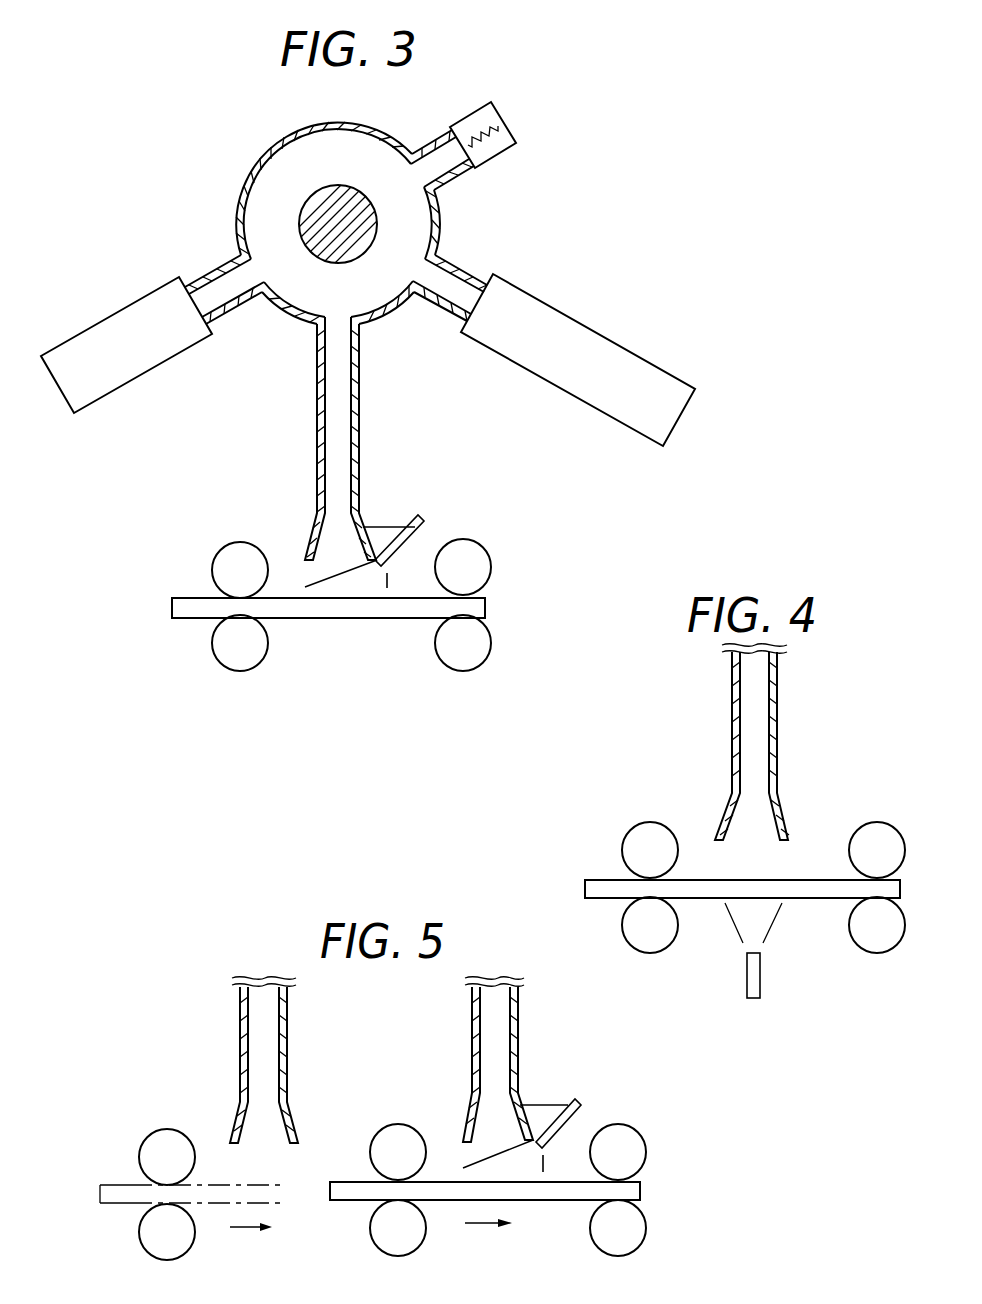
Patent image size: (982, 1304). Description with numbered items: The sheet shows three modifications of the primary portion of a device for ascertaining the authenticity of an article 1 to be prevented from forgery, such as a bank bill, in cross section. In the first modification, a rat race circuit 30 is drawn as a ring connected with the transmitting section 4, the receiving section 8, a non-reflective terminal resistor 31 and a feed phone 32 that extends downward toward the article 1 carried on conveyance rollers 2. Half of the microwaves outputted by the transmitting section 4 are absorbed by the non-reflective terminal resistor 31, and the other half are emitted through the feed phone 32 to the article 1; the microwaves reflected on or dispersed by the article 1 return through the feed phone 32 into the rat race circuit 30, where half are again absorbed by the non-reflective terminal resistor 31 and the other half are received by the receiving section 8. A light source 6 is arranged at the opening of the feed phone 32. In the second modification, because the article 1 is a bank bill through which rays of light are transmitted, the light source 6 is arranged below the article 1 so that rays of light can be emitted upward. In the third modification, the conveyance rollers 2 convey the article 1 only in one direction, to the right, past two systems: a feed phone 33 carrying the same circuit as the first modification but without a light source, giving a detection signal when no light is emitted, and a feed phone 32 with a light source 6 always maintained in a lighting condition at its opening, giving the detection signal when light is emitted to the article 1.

In FIG. 3, the article to be prevented from forgery 1 is at (172, 606).
In FIG. 4, the article to be prevented from forgery 1 is at (600, 880).
In FIG. 3, the conveyance rollers 2 is at (222, 655).
In FIG. 5, the conveyance rollers 2 is at (146, 1245).
In FIG. 3, the transmitting section 4 is at (518, 291).
In FIG. 3, the light source 6 is at (420, 516).
In FIG. 4, the light source 6 is at (760, 978).
In FIG. 5, the light source 6 is at (575, 1099).
In FIG. 3, the receiving section 8 is at (118, 310).
In FIG. 3, the rat race circuit 30 is at (355, 121).
In FIG. 3, the non-reflective terminal resistor 31 is at (503, 106).
In FIG. 3, the feed phone 32 is at (360, 458).
In FIG. 4, the feed phone 32 is at (777, 728).
In FIG. 5, the feed phone 32 is at (518, 1050).
In FIG. 5, the feed phone 33 is at (287, 1052).